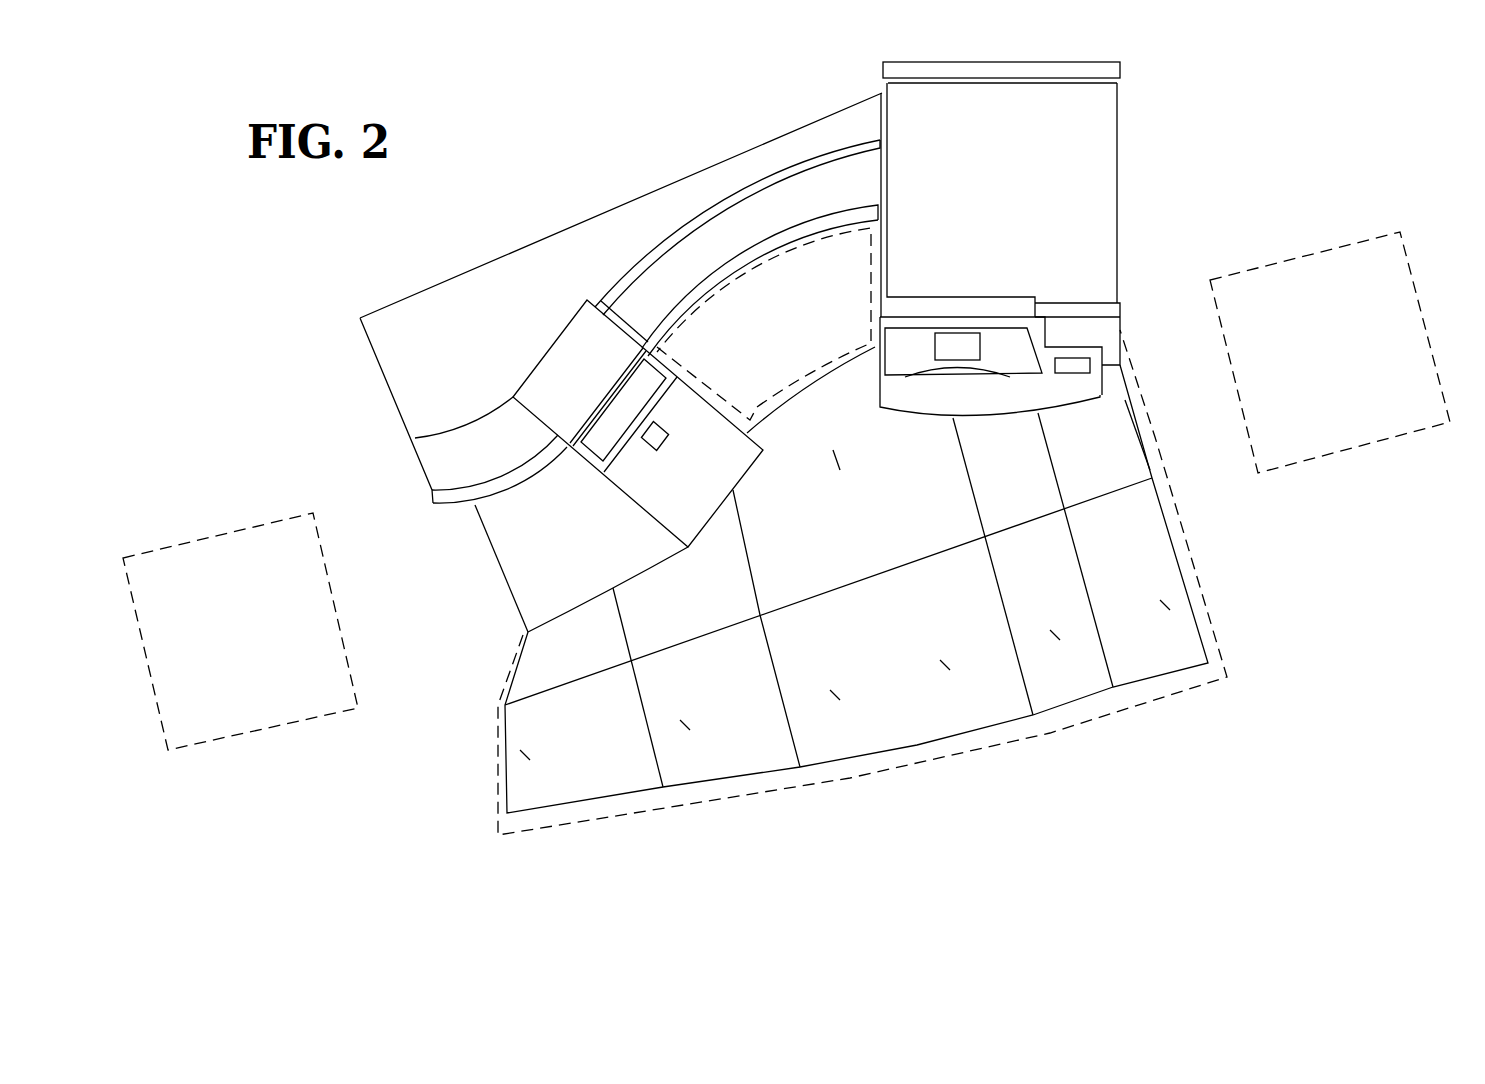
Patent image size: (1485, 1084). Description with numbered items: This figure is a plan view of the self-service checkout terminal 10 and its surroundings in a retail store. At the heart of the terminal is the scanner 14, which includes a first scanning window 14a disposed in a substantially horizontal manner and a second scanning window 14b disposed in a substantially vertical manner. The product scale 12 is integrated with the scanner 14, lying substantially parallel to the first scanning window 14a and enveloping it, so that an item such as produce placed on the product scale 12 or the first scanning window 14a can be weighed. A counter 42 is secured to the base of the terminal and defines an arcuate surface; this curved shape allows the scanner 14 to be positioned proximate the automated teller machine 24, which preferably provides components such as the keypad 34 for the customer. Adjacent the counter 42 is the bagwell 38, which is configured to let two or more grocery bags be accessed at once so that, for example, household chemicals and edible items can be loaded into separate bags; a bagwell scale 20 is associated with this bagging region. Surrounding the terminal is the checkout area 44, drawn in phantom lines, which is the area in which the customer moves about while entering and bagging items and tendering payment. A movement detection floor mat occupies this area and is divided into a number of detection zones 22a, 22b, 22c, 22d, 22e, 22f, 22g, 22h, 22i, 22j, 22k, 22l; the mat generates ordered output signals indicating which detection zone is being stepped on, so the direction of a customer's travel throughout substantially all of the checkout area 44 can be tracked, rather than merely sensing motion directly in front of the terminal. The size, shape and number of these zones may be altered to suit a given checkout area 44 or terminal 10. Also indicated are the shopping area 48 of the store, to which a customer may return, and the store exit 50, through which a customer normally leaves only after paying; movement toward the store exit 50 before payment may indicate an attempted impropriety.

The self-service checkout terminal 10 is at (602, 73).
The product scale 12 is at (695, 510).
The scanner 14 is at (732, 479).
The first scanning window 14a is at (663, 442).
The second scanning window 14b is at (627, 407).
The bagwell scale 20 is at (768, 417).
The detection zone 22a is at (603, 687).
The detection zone 22b is at (734, 628).
The detection zone 22c is at (815, 526).
The detection zone 22d is at (965, 566).
The detection zone 22e is at (1055, 550).
The detection zone 22f is at (1116, 449).
The detection zone 22g is at (563, 779).
The detection zone 22h is at (717, 751).
The detection zone 22i is at (856, 725).
The detection zone 22j is at (966, 698).
The detection zone 22k is at (1071, 669).
The detection zone 22l is at (1164, 640).
The automated teller machine 24 is at (1020, 122).
The keypad 34 is at (957, 352).
The bagwell 38 is at (917, 745).
The counter 42 is at (693, 275).
The checkout area 44 is at (862, 775).
The shopping area 48 is at (248, 733).
The store exit 50 is at (1328, 457).